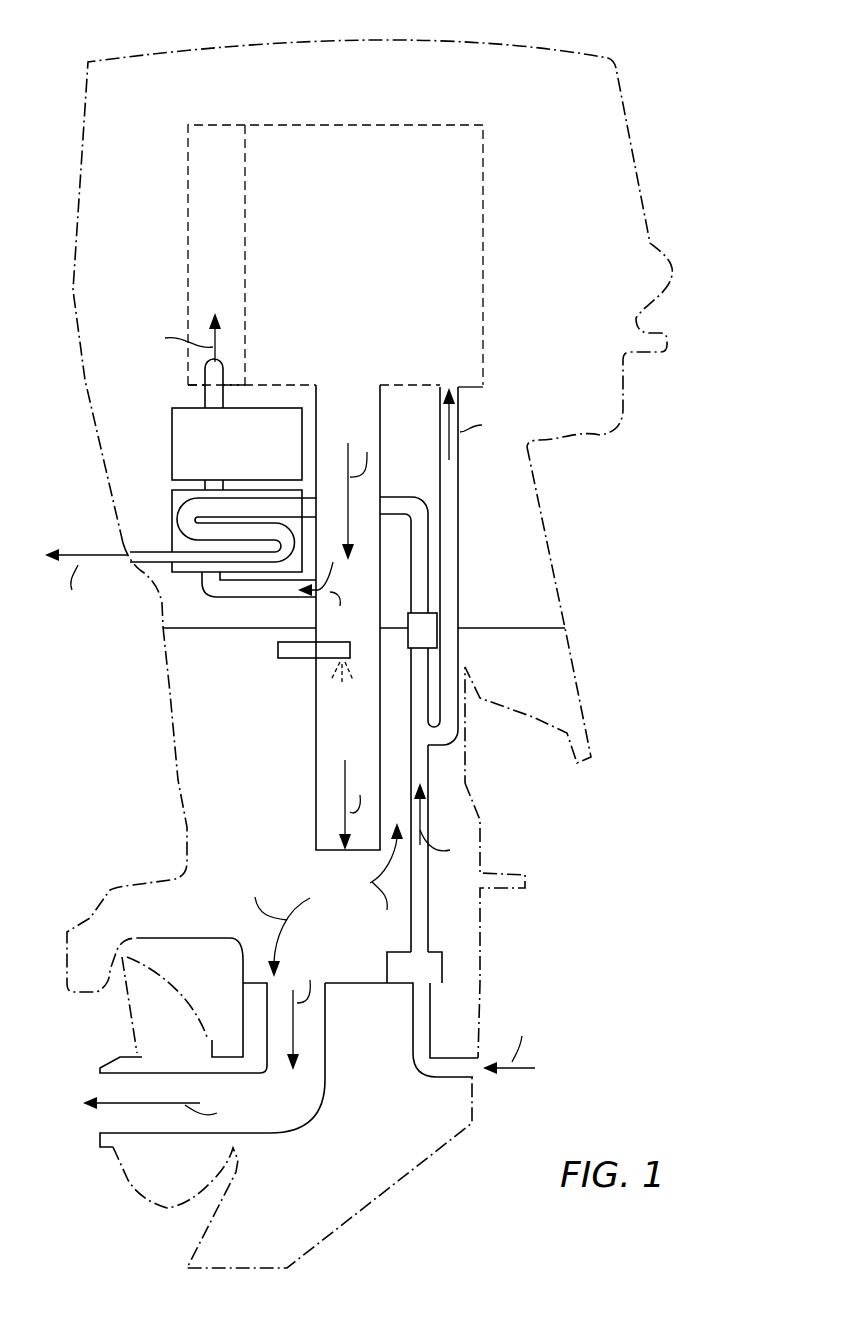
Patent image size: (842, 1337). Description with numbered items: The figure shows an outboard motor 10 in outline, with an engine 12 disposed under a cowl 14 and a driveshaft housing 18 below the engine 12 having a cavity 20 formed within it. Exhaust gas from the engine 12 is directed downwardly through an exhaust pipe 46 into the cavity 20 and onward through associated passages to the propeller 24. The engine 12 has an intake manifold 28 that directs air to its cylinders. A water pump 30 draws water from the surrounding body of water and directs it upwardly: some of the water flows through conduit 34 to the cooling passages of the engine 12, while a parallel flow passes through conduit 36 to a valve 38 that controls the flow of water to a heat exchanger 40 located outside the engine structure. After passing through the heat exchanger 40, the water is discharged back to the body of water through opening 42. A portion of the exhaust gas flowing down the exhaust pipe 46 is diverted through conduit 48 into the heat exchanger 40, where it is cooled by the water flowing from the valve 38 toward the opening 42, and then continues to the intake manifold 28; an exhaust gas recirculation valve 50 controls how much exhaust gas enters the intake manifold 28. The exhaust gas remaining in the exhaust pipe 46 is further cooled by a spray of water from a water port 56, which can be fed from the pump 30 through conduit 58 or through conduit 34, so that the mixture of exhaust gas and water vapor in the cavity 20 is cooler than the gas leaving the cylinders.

The outboard motor 10 is at (703, 106).
The engine 12 is at (483, 235).
The cowl 14 is at (528, 43).
The driveshaft housing 18 is at (468, 765).
The cavity 20 is at (470, 820).
The propeller 24 is at (127, 1008).
The intake manifold 28 is at (212, 247).
The water pump 30 is at (400, 965).
The conduit 34 is at (460, 543).
The conduit 36 is at (411, 673).
The valve 38 is at (408, 625).
The heat exchanger 40 is at (185, 577).
The opening 42 is at (118, 567).
The exhaust pipe 46 is at (315, 780).
The conduit 48 is at (235, 598).
The exhaust gas recirculation valve 50 is at (185, 432).
The water port 56 is at (292, 660).
The conduit 58 is at (430, 890).